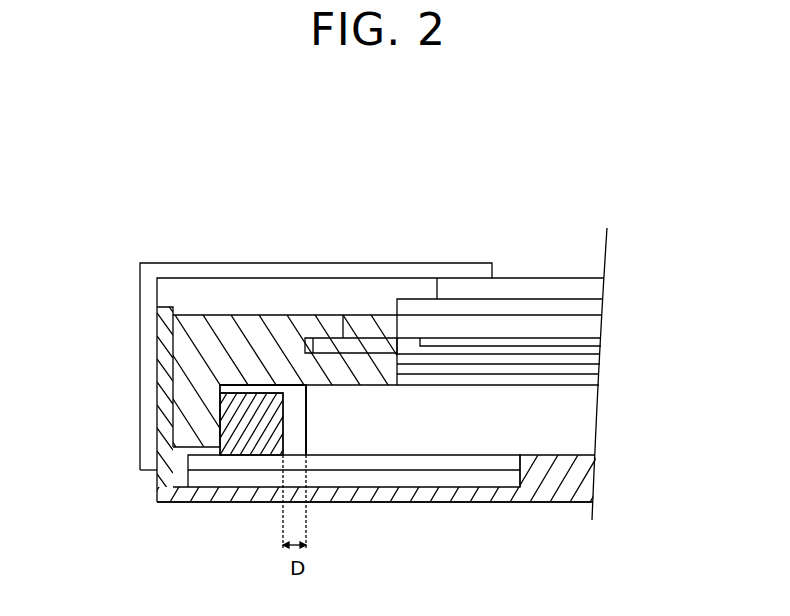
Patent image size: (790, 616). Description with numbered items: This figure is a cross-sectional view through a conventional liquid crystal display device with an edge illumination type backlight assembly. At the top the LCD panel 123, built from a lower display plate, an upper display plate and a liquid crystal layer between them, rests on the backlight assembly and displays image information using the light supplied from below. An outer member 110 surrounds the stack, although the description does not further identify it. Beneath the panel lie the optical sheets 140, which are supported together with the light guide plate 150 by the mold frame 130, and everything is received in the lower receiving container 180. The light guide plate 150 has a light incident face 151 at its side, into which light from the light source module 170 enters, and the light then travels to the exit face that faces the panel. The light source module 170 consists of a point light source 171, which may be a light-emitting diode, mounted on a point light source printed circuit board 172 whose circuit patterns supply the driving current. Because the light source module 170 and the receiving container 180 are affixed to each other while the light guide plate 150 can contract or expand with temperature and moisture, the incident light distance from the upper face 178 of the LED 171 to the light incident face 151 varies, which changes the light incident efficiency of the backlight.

The encapsulation layer 110 is at (312, 265).
The LCD panel 123 is at (605, 306).
The mold frame 130 is at (211, 328).
The optical sheets 140 is at (617, 338).
The light guide plate 150 is at (588, 413).
The light incident face 151 is at (306, 406).
The light source module 170 is at (275, 580).
The point light source 171 is at (225, 457).
The point light source printed circuit board 172 is at (258, 467).
The upper face of the LED 178 is at (283, 428).
The receiving container 180 is at (590, 476).